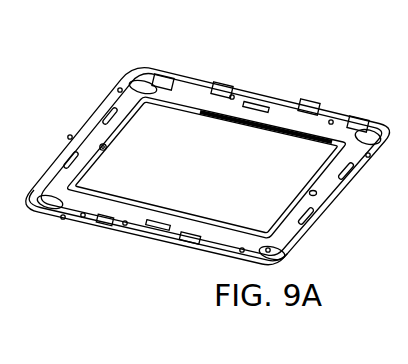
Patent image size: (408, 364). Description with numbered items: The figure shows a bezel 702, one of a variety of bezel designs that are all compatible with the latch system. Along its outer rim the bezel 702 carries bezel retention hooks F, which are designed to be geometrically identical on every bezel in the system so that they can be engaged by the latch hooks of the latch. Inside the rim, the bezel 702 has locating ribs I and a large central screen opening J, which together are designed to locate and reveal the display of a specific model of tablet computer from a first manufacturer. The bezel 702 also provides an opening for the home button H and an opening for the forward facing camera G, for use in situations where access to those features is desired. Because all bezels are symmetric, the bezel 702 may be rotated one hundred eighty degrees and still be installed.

The bezel 702 is at (156, 251).
The bezel retention hooks F is at (162, 66).
The forward facing camera opening G is at (97, 141).
The home button opening H is at (328, 196).
The locating ribs I is at (318, 223).
The screen opening J is at (167, 192).